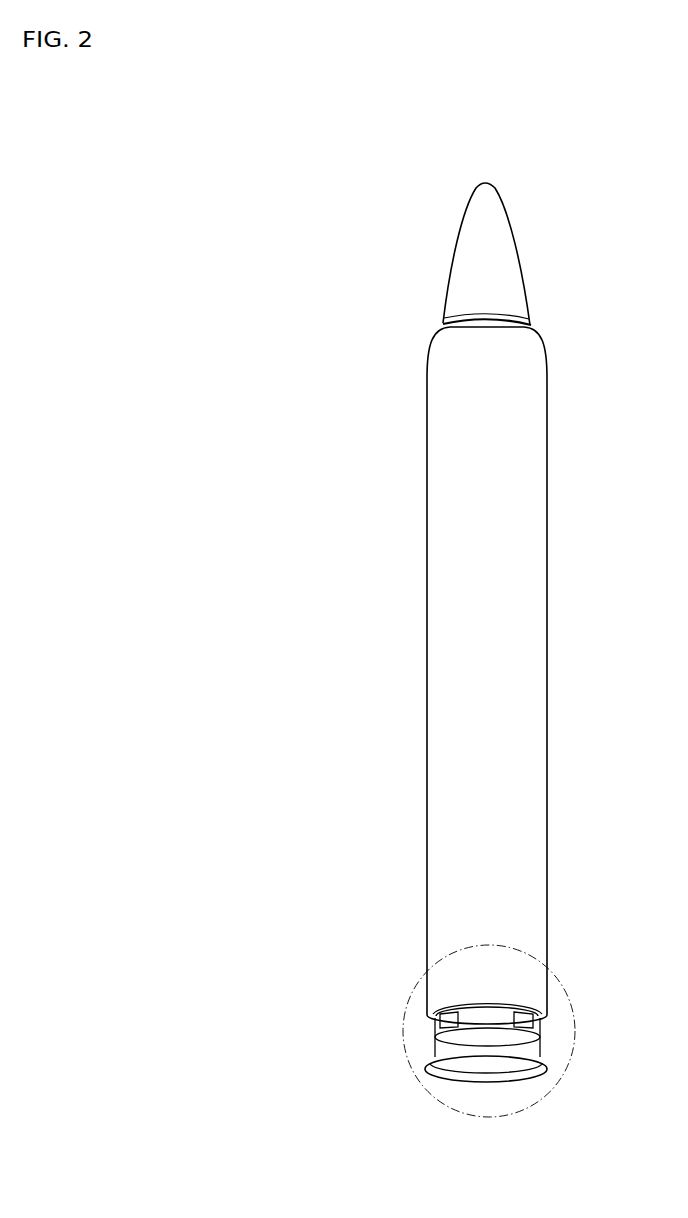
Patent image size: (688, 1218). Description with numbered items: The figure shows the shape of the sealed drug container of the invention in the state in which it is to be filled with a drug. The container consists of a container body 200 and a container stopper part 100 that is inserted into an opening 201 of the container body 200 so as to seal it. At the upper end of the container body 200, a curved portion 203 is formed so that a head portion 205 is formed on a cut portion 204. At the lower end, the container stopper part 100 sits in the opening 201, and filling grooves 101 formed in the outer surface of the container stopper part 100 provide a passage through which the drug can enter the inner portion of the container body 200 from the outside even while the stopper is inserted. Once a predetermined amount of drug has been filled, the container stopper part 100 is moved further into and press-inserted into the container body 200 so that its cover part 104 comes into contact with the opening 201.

The container stopper part 100 is at (435, 1049).
The filling grooves 101 is at (427, 1013).
The cover part 104 is at (517, 1073).
The container body 200 is at (427, 673).
The opening 201 is at (543, 1025).
The curved portion 203 is at (542, 340).
The cut portion 204 is at (443, 326).
The head portion 205 is at (452, 247).